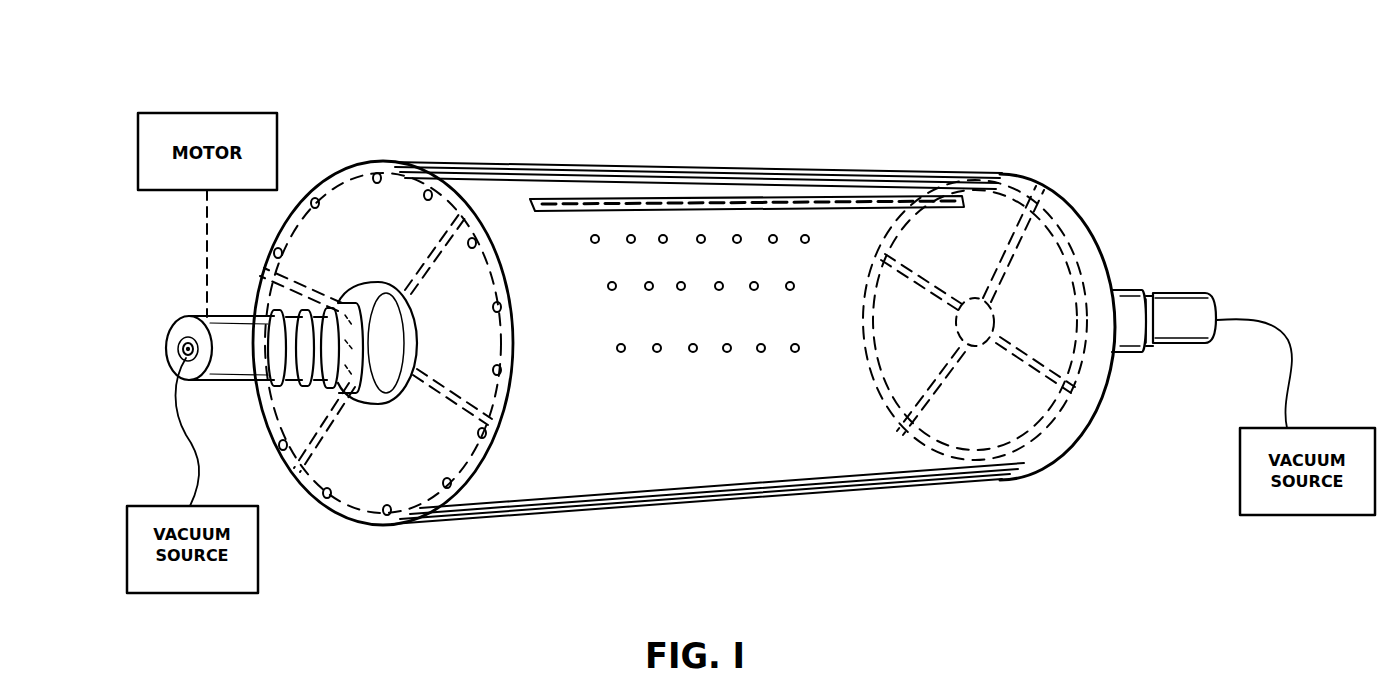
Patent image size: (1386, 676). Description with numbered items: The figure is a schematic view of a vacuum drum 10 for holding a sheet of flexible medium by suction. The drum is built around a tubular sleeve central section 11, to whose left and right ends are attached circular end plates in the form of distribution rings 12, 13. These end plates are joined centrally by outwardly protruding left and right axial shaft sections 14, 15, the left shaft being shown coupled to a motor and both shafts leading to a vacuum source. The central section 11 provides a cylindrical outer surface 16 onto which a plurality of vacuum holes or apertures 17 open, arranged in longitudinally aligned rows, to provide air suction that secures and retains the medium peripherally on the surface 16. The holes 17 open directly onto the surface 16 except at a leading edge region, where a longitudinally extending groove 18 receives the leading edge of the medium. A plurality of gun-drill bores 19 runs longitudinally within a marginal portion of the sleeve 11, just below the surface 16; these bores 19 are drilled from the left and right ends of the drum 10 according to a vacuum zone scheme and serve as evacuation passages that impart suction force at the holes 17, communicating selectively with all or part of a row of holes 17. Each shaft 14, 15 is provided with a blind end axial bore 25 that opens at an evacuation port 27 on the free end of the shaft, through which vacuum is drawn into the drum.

The vacuum drum 10 is at (700, 150).
The tubular sleeve central section 11 is at (500, 160).
The left end plate (distribution ring) 12 is at (360, 212).
The right end plate (distribution ring) 13 is at (1088, 224).
The left axial shaft section 14 is at (237, 358).
The right axial shaft section 15 is at (1160, 293).
The cylindrical outer surface 16 is at (808, 465).
The vacuum holes 17 is at (791, 297).
The longitudinally extending groove 18 is at (878, 182).
The gun-drill bores 19 is at (500, 373).
The blind end axial bore 25 is at (180, 342).
The evacuation port 27 is at (182, 355).